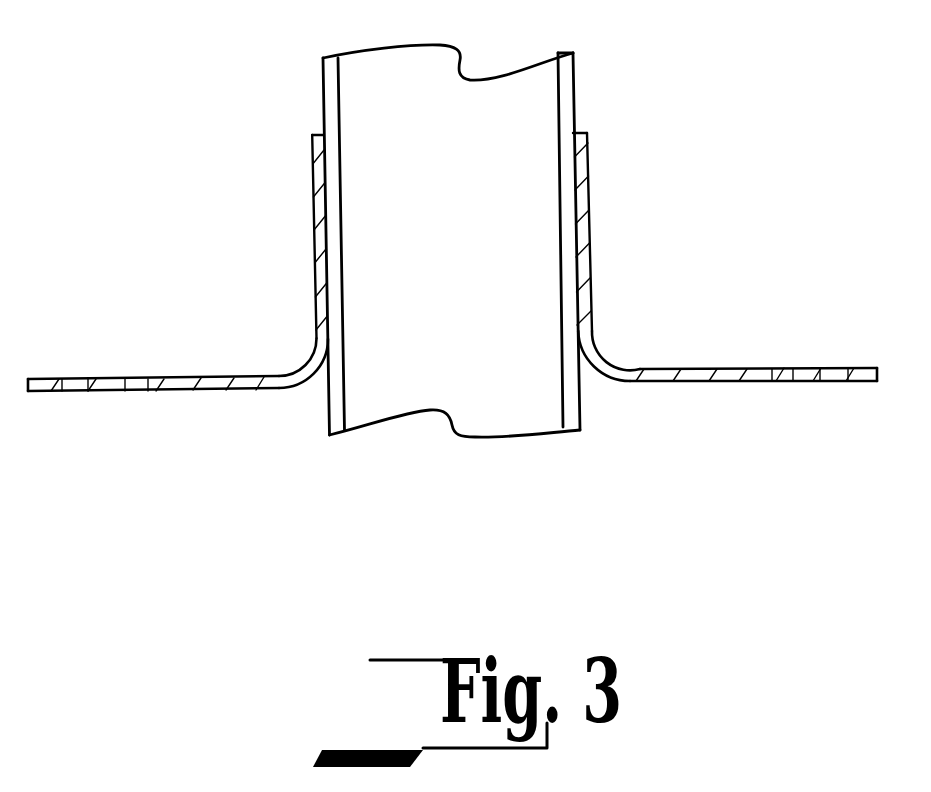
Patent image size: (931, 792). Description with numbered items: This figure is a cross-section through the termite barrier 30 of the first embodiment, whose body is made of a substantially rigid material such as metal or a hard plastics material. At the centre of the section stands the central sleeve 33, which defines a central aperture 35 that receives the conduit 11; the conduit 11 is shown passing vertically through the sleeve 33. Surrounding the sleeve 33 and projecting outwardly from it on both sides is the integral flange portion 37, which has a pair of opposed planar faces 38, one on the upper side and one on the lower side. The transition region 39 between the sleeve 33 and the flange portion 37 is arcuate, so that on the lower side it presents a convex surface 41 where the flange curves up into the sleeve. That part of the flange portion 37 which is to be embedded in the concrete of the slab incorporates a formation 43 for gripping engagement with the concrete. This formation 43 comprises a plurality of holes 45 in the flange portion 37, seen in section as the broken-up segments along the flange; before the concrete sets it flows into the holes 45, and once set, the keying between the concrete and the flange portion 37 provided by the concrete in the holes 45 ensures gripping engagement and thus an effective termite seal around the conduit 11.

The conduit 11 is at (575, 80).
The termite barrier 30 is at (252, 260).
The central sleeve 33 is at (589, 202).
The central aperture 35 is at (589, 155).
The flange portion 37 is at (755, 368).
The planar faces 38 is at (690, 368).
The transition region 39 is at (600, 357).
The convex surface 41 is at (282, 388).
The formation 43 is at (781, 382).
The holes 45 is at (75, 379).